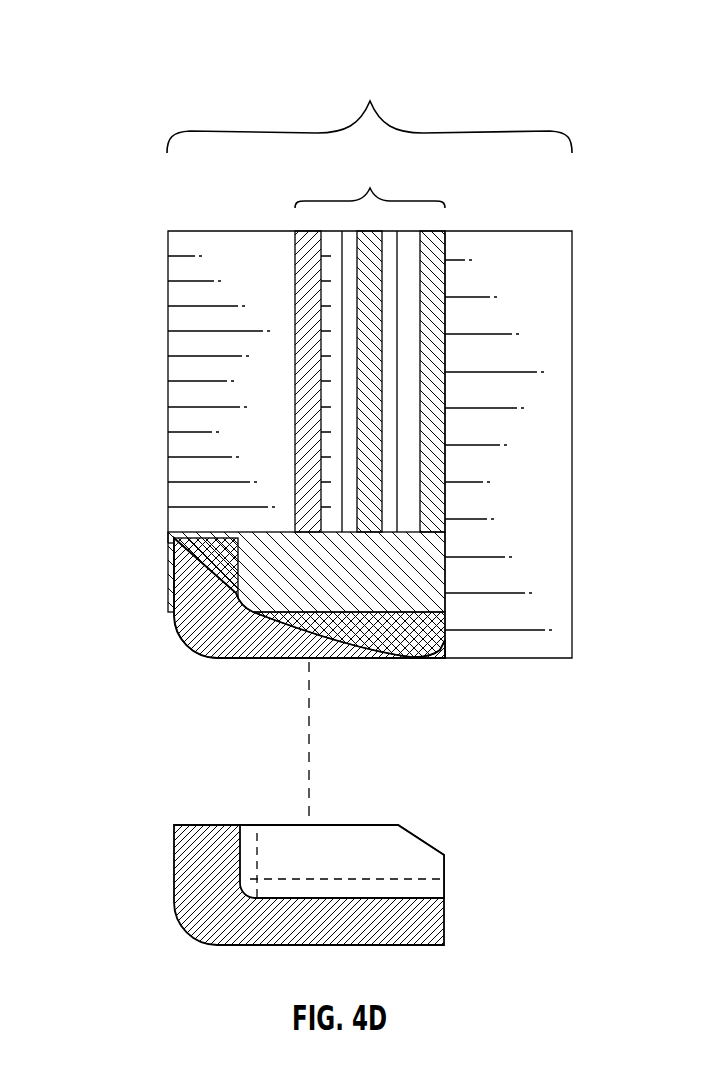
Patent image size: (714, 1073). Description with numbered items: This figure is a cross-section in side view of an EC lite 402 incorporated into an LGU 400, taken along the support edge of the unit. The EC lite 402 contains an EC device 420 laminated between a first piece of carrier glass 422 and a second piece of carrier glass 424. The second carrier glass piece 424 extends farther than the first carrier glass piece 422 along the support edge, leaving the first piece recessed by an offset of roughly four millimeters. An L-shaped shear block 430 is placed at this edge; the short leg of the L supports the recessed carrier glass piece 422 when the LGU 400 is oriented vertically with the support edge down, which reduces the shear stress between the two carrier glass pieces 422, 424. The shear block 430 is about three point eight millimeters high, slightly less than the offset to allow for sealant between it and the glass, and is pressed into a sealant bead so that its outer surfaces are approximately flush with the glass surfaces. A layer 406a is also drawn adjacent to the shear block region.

The LGU 400 is at (158, 43).
The EC lite 402 is at (369, 109).
The EC device 420 is at (370, 342).
The first piece of carrier glass 422 is at (218, 402).
The second piece of carrier glass 424 is at (522, 257).
The doped layer 406a is at (258, 573).
The shear block 430 is at (172, 608).